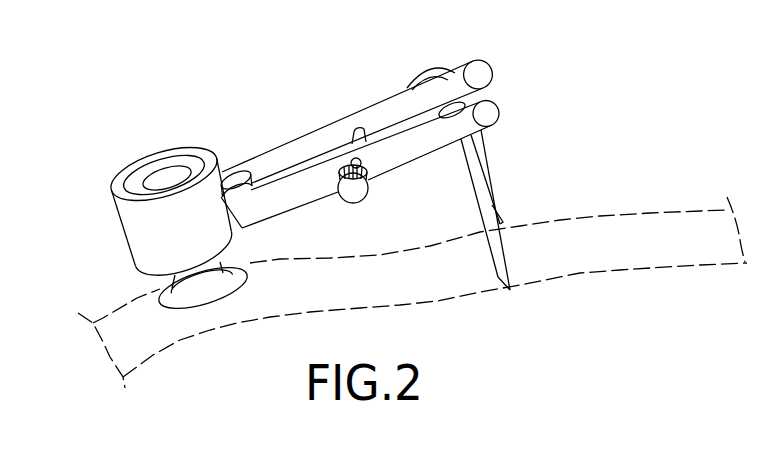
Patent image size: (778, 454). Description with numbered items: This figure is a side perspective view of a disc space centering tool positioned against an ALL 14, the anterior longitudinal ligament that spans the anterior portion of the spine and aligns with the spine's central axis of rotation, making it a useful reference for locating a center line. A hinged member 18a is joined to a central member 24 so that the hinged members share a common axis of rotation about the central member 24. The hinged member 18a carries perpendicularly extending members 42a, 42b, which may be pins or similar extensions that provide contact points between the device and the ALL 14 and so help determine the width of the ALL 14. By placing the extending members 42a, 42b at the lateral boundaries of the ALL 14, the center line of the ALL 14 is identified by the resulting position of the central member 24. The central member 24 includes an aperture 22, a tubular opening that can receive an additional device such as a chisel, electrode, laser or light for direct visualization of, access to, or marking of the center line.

The ALL 14 is at (632, 268).
The hinged member 18a is at (382, 110).
The aperture 22 is at (157, 177).
The central member 24 is at (130, 237).
The perpendicularly extending member 42a is at (497, 279).
The perpendicularly extending member 42b is at (495, 175).